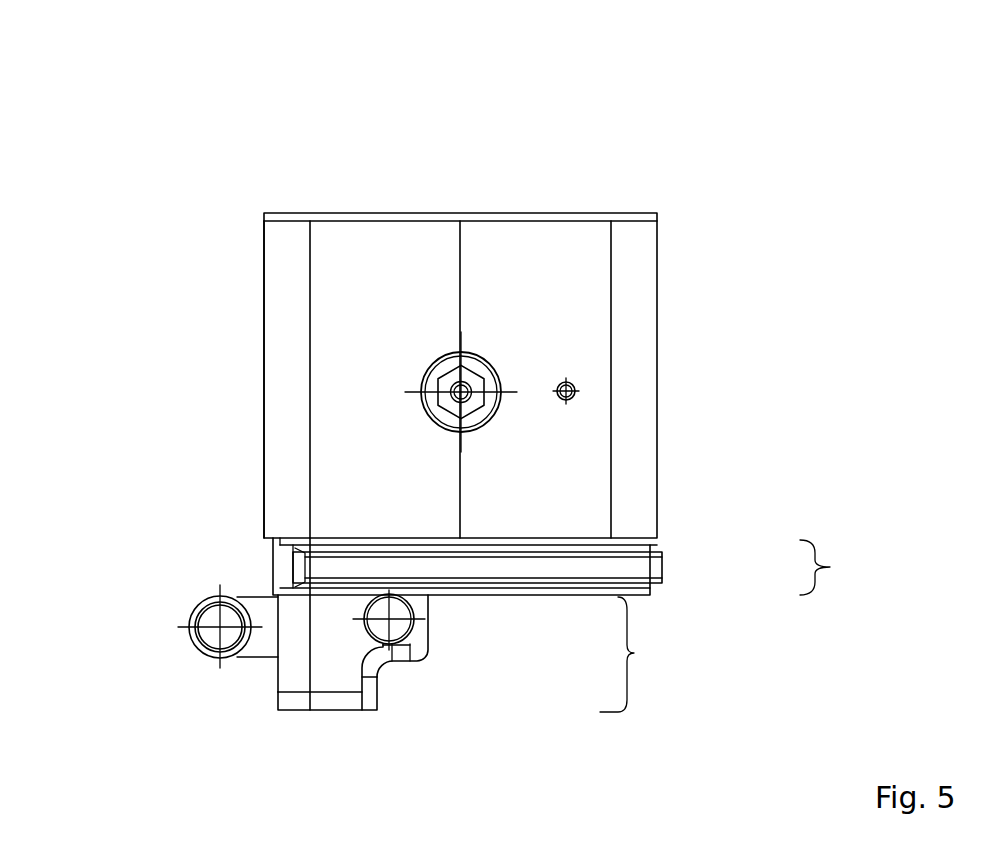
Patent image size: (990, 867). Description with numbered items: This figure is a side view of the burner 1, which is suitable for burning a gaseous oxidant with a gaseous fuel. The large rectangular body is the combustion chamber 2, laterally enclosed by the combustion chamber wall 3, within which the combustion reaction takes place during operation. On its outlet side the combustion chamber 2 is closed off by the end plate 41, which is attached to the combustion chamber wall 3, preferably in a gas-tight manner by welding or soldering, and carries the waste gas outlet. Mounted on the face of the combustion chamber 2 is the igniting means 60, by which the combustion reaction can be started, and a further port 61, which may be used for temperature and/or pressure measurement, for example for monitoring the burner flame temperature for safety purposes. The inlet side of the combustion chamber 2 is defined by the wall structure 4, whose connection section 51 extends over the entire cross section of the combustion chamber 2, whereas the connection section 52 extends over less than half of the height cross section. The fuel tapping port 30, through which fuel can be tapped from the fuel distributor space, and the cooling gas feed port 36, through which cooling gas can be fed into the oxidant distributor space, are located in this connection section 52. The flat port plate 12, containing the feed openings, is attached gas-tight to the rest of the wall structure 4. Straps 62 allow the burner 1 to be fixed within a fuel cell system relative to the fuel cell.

The burner 1 is at (708, 173).
The combustion chamber 2 is at (264, 378).
The combustion chamber wall 3 is at (290, 448).
The wall structure 4 is at (274, 676).
The port plate 12 is at (333, 700).
The fuel tapping port 30 is at (193, 610).
The cooling gas feed port 36 is at (427, 618).
The end plate 41 is at (460, 213).
The connection section 51 is at (830, 567).
The connection section 52 is at (634, 653).
The igniting means 60 is at (494, 363).
The port 61 is at (577, 387).
The straps 62 is at (322, 567).